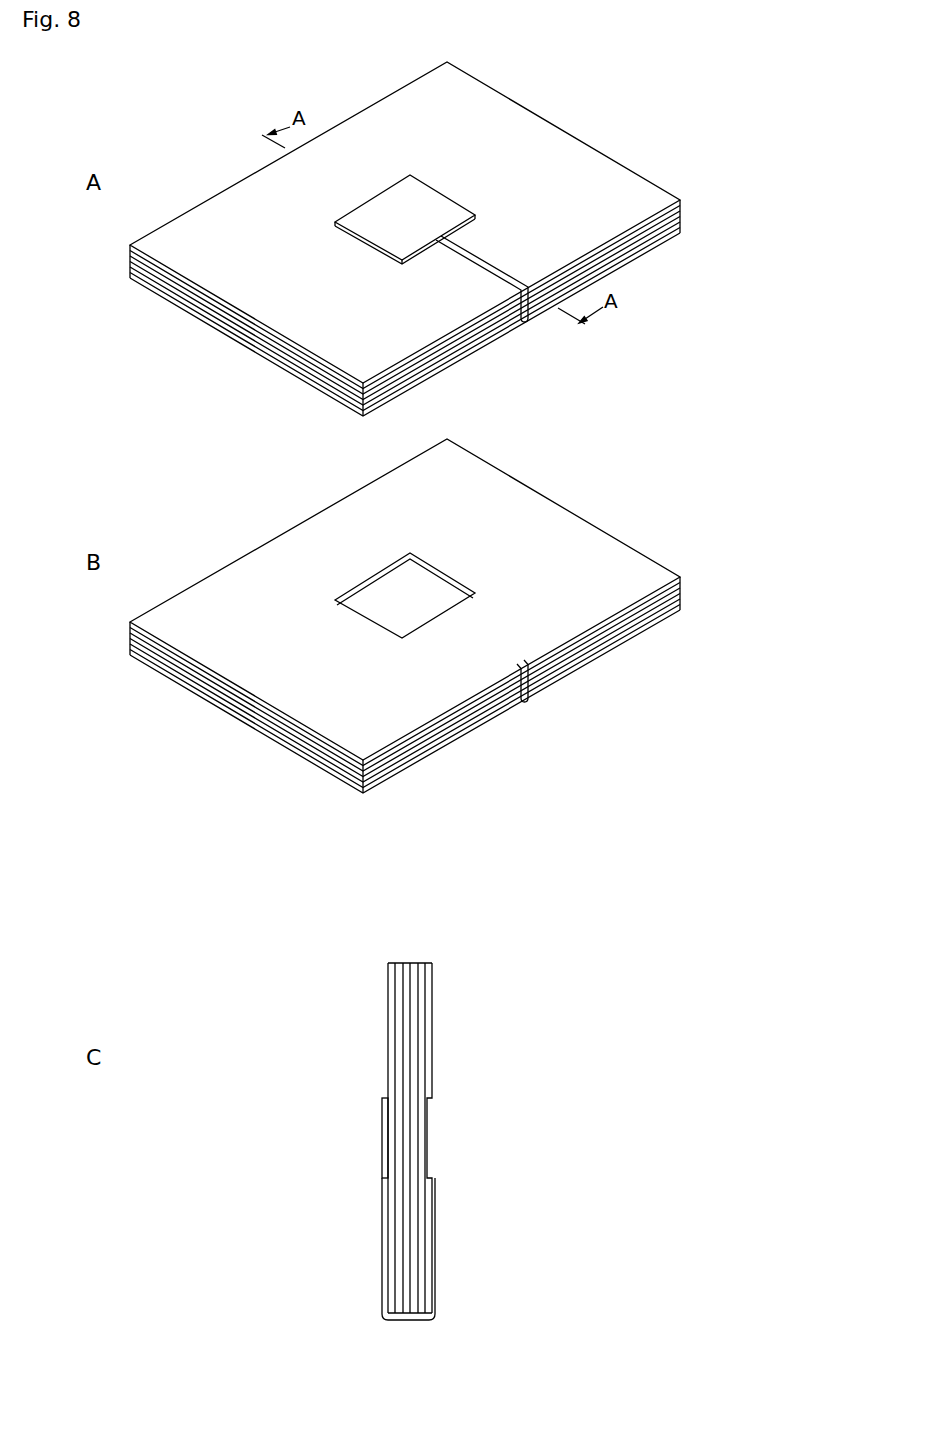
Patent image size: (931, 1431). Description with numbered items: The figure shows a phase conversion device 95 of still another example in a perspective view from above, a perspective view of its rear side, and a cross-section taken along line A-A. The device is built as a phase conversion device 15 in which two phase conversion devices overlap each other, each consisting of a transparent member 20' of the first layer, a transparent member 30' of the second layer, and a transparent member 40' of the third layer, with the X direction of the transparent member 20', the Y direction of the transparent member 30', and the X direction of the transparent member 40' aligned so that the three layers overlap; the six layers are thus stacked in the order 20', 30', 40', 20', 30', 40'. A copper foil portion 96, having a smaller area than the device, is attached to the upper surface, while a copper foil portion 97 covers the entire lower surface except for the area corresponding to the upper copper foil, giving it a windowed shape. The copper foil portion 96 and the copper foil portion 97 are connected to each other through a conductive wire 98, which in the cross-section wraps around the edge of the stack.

The phase conversion device 15 is at (750, 133).
The transparent member of the first layer 20' is at (436, 725).
The transparent member of the second layer 30' is at (436, 736).
The transparent member of the third layer 40' is at (436, 748).
The phase conversion device 95 is at (481, 689).
The copper foil portion 96 is at (437, 193).
The copper foil portion 97 is at (683, 234).
The conductive wire 98 is at (529, 323).